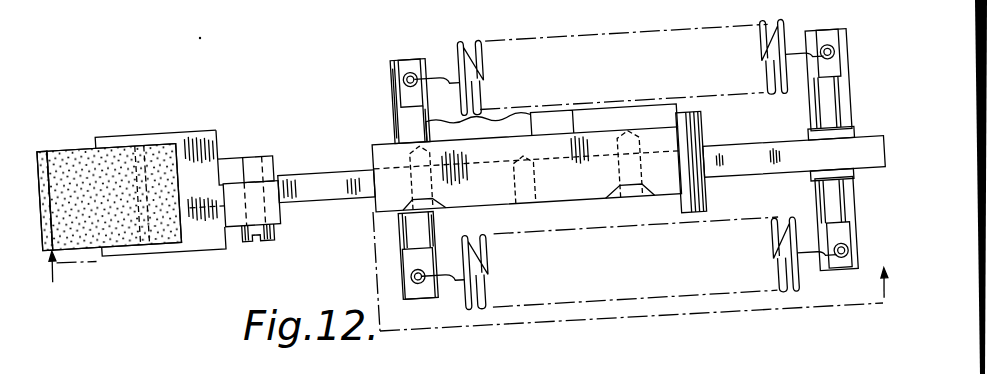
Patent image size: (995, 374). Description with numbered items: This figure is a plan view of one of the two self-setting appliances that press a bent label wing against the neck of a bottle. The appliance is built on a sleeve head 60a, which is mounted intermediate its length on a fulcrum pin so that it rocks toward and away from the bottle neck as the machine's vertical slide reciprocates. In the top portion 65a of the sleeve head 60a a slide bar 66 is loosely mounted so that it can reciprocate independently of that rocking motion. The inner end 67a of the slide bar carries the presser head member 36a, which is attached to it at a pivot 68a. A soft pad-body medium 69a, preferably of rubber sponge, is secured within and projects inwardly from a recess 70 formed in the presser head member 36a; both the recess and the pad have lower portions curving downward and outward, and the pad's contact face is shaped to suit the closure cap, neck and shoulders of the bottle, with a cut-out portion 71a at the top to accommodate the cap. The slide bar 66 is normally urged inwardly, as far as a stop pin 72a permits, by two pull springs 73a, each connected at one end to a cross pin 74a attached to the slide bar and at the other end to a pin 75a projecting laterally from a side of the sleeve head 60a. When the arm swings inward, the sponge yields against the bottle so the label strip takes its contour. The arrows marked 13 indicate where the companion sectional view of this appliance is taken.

The section line 13 is at (465, 275).
The presser head member 36a is at (214, 143).
The sleeve head 60a is at (562, 133).
The top portion 65a is at (561, 201).
The slide bar 66 is at (326, 187).
The inner end 67a is at (262, 176).
The pivot 68a is at (239, 228).
The pad-body medium 69a is at (105, 139).
The recess 70 is at (178, 136).
The cut-out portion 71a is at (44, 132).
The stop pin 72a is at (701, 214).
The pull spring 73a is at (492, 79).
The cross pin 74a is at (834, 295).
The pin 75a is at (396, 70).